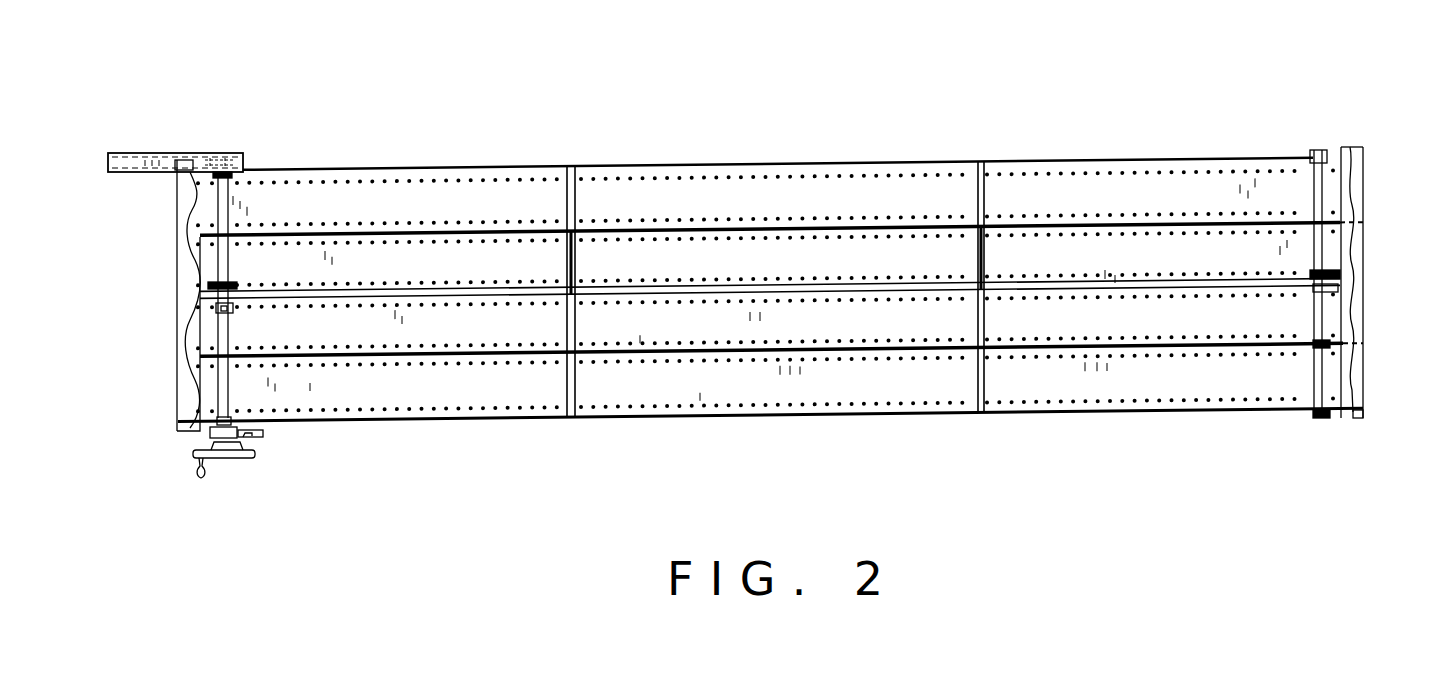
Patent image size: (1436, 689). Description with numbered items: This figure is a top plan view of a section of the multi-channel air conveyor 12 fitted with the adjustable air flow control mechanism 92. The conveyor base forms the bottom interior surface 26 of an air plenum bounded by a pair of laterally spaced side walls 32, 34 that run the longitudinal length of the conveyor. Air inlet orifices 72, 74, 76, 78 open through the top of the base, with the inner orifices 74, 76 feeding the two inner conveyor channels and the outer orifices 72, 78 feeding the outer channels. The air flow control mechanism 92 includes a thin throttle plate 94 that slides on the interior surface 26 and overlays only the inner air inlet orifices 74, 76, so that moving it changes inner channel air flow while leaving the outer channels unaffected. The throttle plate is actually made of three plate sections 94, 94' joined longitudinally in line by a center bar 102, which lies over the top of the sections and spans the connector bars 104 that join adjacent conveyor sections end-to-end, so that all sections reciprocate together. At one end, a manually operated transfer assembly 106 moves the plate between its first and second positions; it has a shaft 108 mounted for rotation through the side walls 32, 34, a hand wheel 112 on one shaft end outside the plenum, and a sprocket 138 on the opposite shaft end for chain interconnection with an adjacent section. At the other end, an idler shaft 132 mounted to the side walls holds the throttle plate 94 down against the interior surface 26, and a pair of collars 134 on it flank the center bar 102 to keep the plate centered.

The multi-channel air conveyor 12 is at (713, 92).
The bottom interior surface 26 is at (329, 197).
The side wall 32 is at (983, 160).
The side wall 34 is at (987, 415).
The air inlet orifice 72 is at (601, 172).
The air inlet orifice 74 is at (489, 238).
The air inlet orifice 76 is at (459, 354).
The air inlet orifice 78 is at (694, 409).
The adjustable air flow control mechanism 92 is at (401, 359).
The throttle plate 94 is at (397, 201).
The throttle plate section 94' is at (775, 195).
The center bar 102 is at (335, 297).
The connector bars 104 is at (572, 420).
The manually operated transfer assembly 106 is at (220, 312).
The shaft 108 is at (213, 213).
The hand wheel 112 is at (233, 460).
The idler shaft 132 is at (1320, 375).
The collars 134 is at (1323, 265).
The sprocket 138 is at (210, 158).